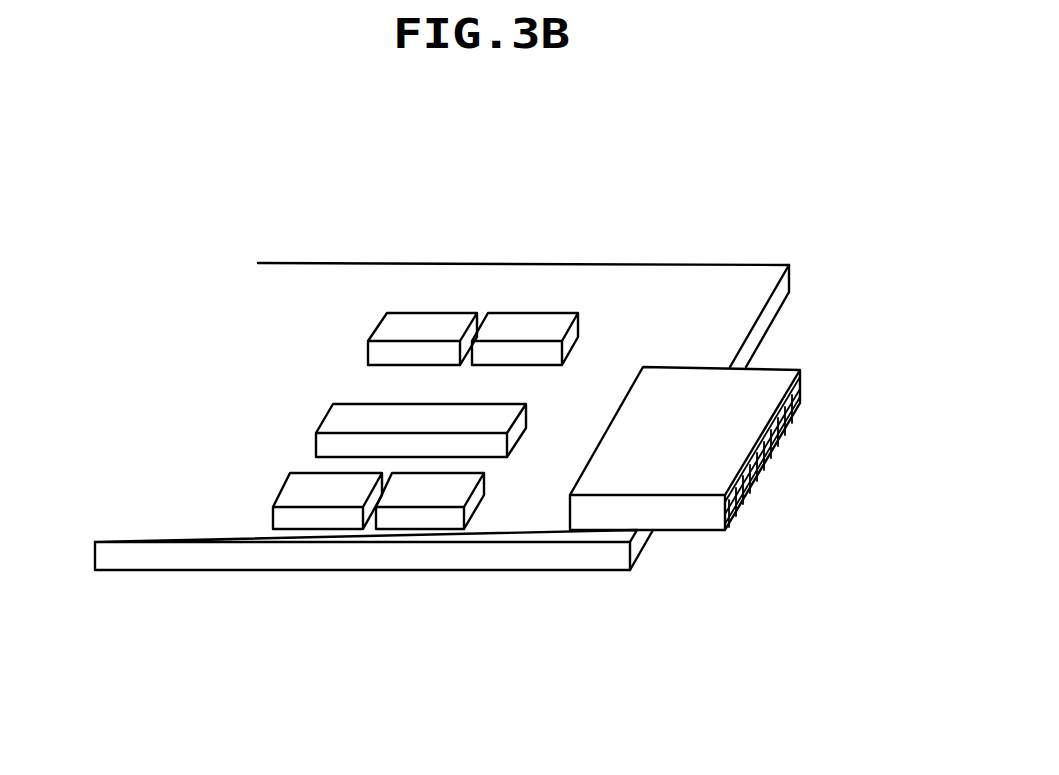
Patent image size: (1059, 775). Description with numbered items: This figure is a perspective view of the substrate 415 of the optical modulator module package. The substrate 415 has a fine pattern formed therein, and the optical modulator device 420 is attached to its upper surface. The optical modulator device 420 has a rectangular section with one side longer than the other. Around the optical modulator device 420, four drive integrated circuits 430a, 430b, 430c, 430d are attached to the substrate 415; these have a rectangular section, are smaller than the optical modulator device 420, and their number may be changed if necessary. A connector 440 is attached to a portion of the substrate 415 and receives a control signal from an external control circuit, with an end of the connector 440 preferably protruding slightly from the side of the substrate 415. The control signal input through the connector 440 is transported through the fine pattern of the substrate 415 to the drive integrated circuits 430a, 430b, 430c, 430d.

The substrate 415 is at (723, 262).
The optical modulator device 420 is at (340, 418).
The drive integrated circuit 430a is at (393, 316).
The drive integrated circuit 430b is at (563, 317).
The drive integrated circuit 430c is at (334, 515).
The drive integrated circuit 430d is at (437, 516).
The connector 440 is at (788, 367).